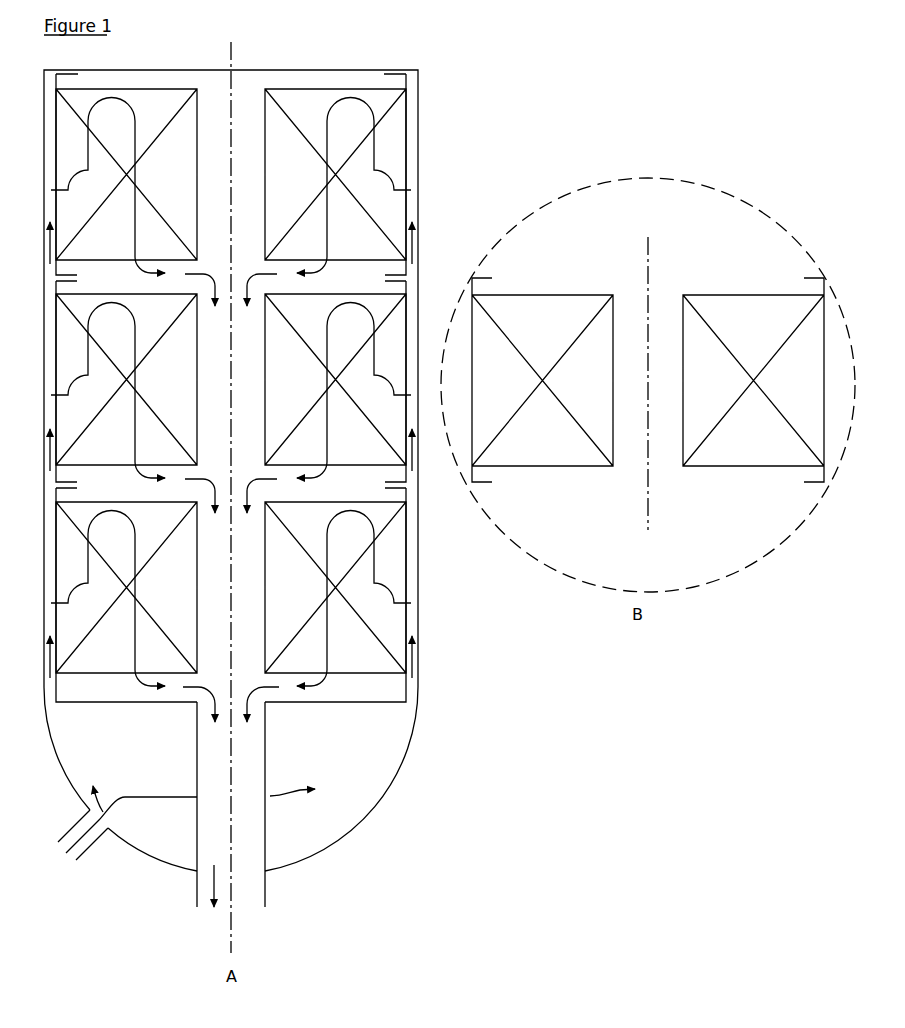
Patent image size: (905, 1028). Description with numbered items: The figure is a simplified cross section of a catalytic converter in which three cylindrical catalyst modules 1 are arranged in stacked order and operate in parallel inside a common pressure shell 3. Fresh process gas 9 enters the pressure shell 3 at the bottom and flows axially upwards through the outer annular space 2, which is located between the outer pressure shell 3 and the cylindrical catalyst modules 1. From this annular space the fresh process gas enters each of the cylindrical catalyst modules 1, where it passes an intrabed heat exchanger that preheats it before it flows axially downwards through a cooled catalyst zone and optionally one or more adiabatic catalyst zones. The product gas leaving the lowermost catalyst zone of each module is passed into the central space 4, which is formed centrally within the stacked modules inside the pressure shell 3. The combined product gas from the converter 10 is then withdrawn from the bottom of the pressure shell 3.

The cylindrical catalyst module 1 is at (405, 534).
The outer annular space 2 is at (410, 575).
The pressure shell 3 is at (417, 622).
The central space 4 is at (247, 613).
The fresh process gas 9 is at (123, 826).
The combined product gas from the converter 10 is at (231, 822).